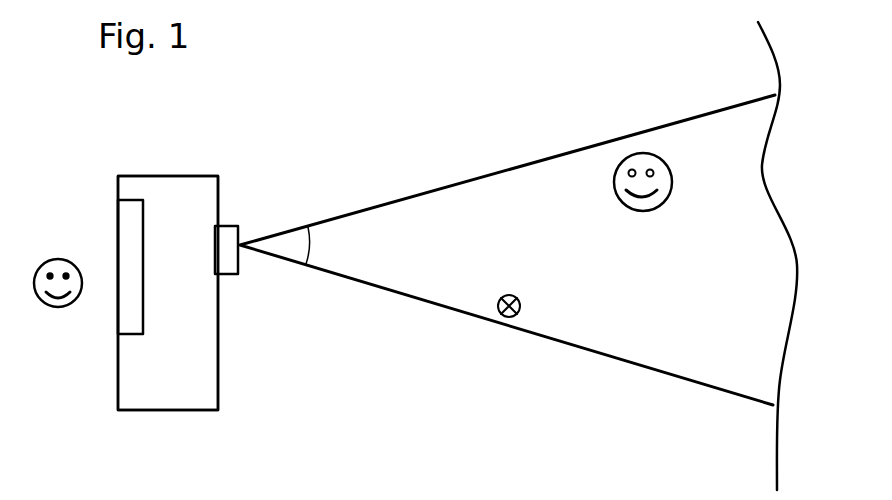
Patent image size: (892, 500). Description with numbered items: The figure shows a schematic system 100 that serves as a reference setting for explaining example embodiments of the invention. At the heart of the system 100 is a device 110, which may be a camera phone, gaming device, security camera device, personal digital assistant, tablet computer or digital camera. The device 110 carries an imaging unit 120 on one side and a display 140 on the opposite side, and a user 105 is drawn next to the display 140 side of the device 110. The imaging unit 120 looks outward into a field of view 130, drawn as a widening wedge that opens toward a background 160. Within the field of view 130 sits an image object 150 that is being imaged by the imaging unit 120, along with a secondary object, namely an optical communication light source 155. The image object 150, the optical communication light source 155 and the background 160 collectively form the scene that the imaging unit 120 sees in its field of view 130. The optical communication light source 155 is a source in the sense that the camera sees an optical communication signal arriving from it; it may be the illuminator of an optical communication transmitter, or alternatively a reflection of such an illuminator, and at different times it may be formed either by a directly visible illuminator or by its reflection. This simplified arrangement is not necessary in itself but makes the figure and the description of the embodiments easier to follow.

The system 100 is at (208, 144).
The user 105 is at (62, 313).
The device 110 is at (218, 347).
The imaging unit 120 is at (240, 273).
The field of view 130 is at (308, 227).
The display 140 is at (118, 226).
The image object 150 is at (640, 153).
The optical communication light source 155 is at (510, 317).
The background 160 is at (780, 407).